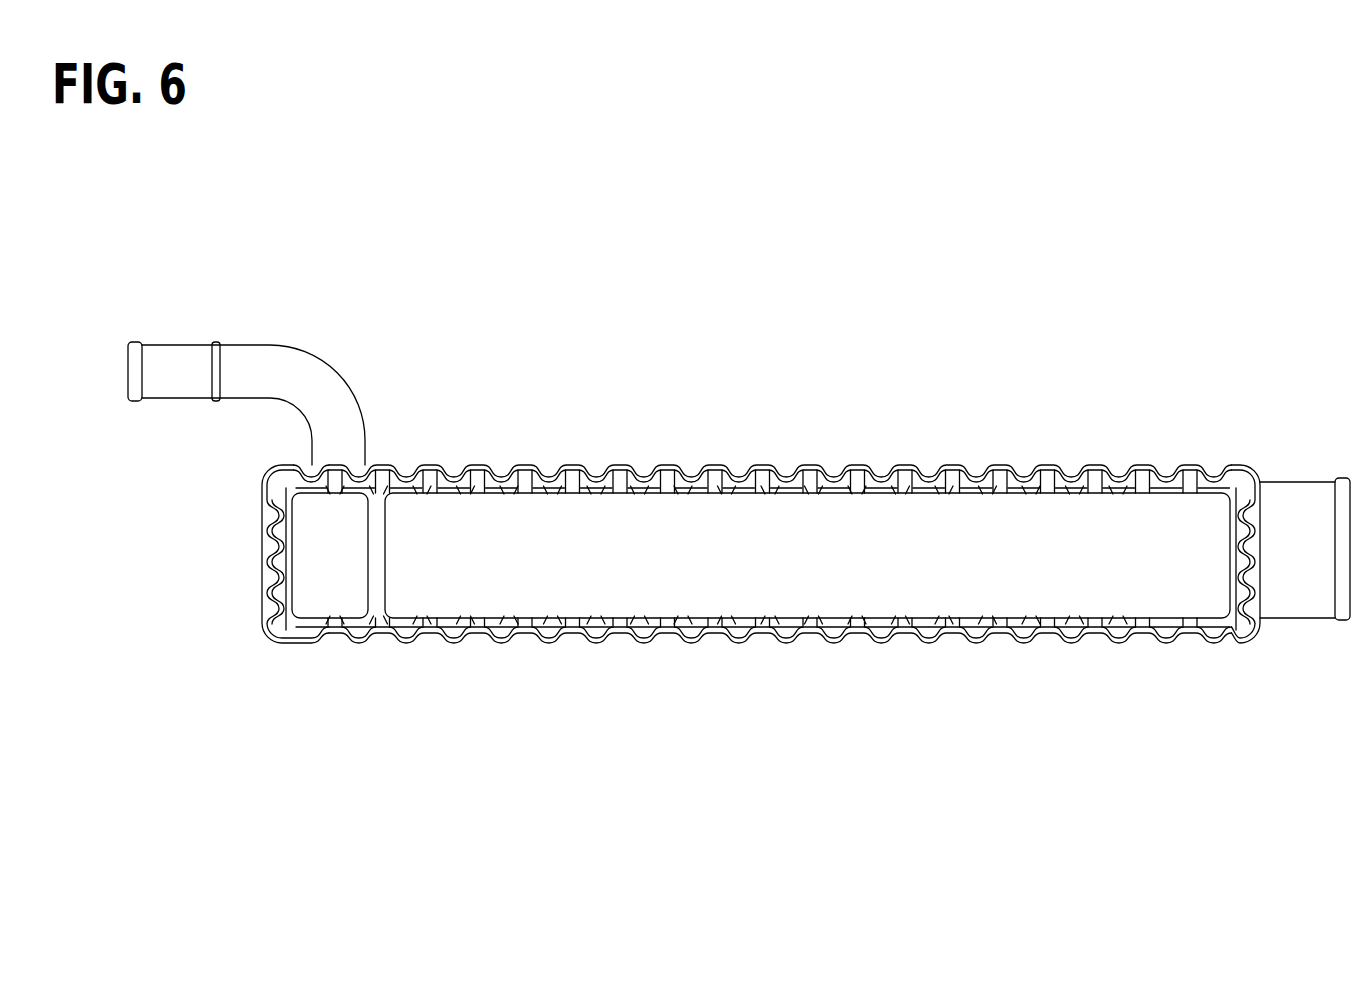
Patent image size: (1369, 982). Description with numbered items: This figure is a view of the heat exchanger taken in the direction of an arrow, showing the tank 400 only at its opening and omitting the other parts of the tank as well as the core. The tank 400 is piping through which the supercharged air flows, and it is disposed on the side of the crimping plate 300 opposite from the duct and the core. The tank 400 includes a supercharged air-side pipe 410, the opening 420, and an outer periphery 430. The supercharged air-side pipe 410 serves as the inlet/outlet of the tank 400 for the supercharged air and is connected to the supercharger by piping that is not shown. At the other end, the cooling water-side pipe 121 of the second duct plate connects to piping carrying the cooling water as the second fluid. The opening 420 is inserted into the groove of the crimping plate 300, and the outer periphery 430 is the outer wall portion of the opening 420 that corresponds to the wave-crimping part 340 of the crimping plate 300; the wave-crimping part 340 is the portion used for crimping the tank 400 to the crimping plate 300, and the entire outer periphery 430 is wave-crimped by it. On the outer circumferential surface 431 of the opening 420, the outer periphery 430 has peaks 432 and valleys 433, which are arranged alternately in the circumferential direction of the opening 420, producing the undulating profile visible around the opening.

The cooling water-side pipe 121 is at (279, 346).
The supercharged air-side pipe 410 is at (1292, 482).
The tank 400 is at (1072, 625).
The outer periphery 430 is at (644, 490).
The wave-crimping part 340 is at (921, 490).
The crimping plate 300 is at (1026, 490).
The opening 420 is at (637, 632).
The peaks 432 is at (278, 530).
The valleys 433 is at (278, 553).
The outer circumferential surface 431 is at (278, 578).